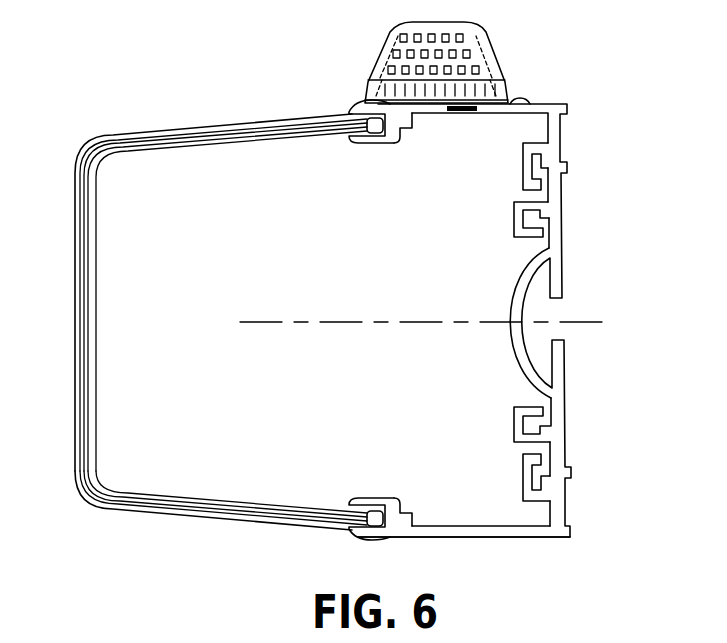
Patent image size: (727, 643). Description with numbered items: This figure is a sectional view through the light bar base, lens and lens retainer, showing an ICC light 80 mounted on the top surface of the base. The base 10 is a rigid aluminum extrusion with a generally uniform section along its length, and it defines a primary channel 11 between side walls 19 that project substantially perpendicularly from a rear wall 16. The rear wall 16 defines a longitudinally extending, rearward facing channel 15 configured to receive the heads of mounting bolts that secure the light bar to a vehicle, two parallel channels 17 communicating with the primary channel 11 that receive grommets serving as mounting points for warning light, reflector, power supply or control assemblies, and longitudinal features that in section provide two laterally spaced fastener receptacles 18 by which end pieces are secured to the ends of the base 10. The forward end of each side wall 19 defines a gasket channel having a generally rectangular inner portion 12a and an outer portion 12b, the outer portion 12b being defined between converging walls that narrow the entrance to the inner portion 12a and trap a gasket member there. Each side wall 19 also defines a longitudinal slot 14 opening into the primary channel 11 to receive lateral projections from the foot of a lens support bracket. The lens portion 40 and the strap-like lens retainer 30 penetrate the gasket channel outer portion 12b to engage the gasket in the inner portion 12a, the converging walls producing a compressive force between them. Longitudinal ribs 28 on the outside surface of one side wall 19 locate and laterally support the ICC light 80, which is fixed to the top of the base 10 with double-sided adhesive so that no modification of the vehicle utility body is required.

The base 10 is at (476, 305).
The primary channel 11 is at (463, 374).
The gasket channel inner portion 12a is at (378, 512).
The gasket channel outer portion 12b is at (351, 146).
The longitudinal slot 14 is at (395, 128).
The rearward facing channel 15 is at (533, 305).
The rear wall 16 is at (548, 250).
The parallel channels 17 is at (533, 212).
The fastener receptacles 18 is at (542, 160).
The side walls 19 is at (466, 525).
The longitudinal ribs 28 is at (350, 110).
The lens retainer 30 is at (116, 141).
The lens portion 40 is at (103, 290).
The ICC light 80 is at (380, 58).